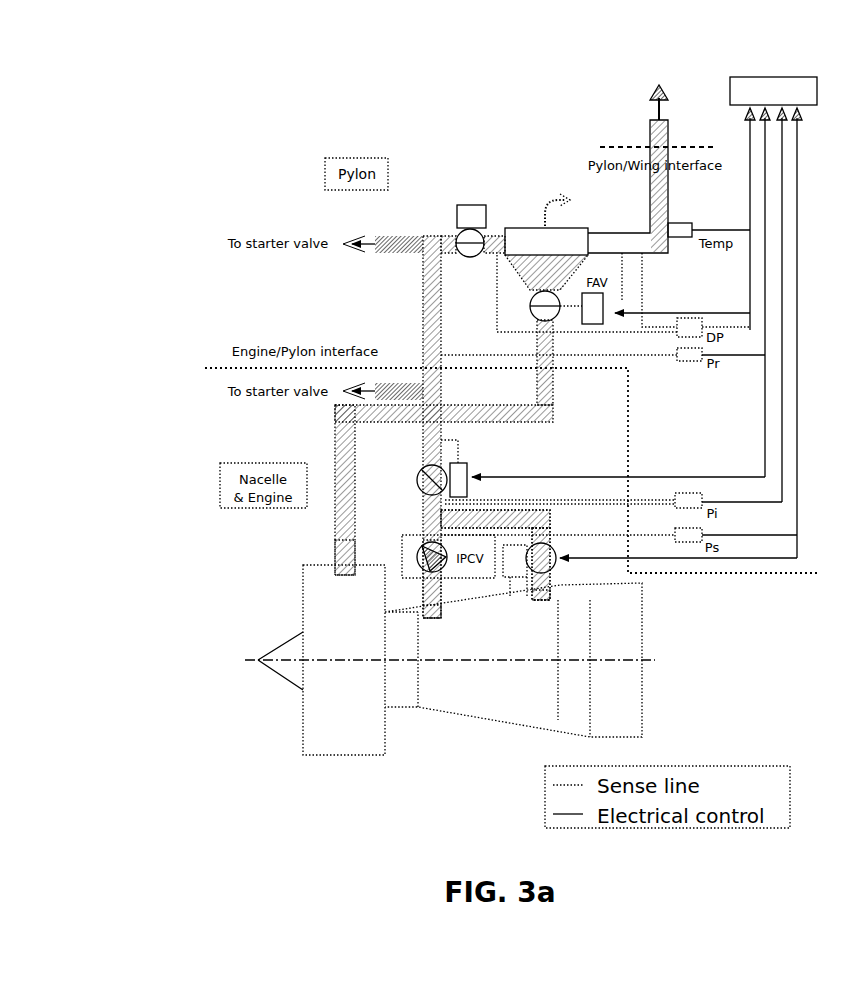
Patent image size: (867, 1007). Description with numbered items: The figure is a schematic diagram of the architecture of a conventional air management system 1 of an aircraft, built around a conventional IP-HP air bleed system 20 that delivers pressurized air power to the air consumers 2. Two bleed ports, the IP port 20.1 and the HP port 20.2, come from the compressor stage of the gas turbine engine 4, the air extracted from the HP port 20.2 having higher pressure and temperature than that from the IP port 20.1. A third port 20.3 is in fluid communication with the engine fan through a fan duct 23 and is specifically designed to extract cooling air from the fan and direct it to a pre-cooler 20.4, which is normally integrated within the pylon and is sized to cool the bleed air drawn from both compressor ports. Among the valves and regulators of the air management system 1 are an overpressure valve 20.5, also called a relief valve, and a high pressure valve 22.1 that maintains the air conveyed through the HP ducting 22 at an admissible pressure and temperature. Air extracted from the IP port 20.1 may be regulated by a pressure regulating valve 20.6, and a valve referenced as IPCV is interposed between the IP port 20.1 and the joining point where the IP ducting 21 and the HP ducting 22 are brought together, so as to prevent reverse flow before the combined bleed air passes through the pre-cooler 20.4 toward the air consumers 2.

The air management system 1 is at (300, 218).
The air consumers 2 is at (663, 67).
The gas turbine engine 4 is at (655, 707).
The IP-HP air bleed system 20 is at (137, 297).
The IP port 20.1 is at (430, 650).
The HP port 20.2 is at (537, 637).
The third port 20.3 is at (333, 570).
The pre-cooler 20.4 is at (512, 226).
The overpressure valve 20.5 is at (462, 207).
The pressure regulating valve 20.6 is at (418, 490).
The IP ducting 21 is at (423, 600).
The HP ducting 22 is at (551, 511).
The high pressure valve 22.1 is at (556, 571).
The fan duct 23 is at (335, 425).